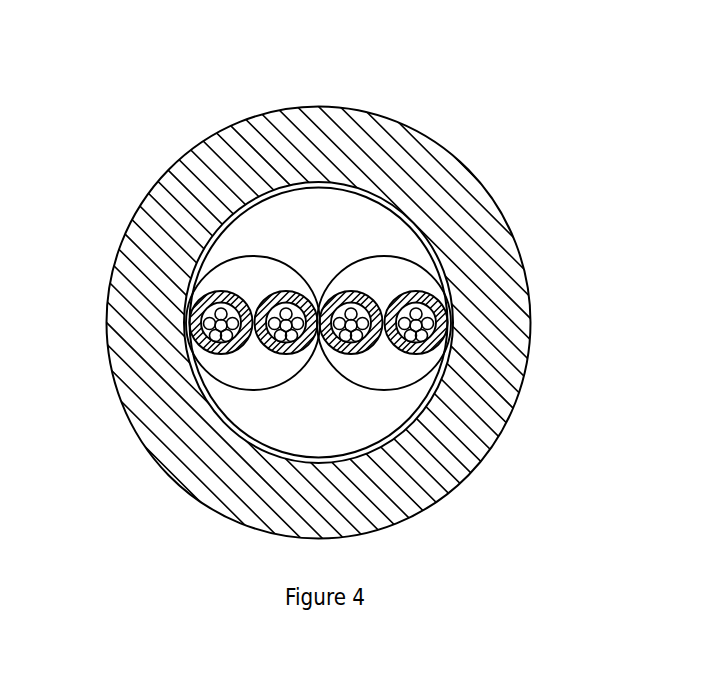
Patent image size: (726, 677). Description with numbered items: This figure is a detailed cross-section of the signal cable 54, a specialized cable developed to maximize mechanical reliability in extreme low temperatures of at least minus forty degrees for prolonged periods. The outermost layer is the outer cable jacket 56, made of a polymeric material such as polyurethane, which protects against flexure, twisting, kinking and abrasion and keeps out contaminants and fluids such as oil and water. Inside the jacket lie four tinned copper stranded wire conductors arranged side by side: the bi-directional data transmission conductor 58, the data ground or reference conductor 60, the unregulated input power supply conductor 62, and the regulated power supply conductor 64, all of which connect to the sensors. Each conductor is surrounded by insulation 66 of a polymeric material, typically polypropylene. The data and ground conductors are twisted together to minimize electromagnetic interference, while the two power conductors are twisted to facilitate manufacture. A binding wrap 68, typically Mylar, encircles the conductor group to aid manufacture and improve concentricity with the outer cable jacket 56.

The signal cable 54 is at (363, 338).
The outer cable jacket 56 is at (142, 197).
The bi-directional data transmission conductor 58 is at (220, 318).
The data ground or reference conductor 60 is at (285, 318).
The unregulated input power supply conductor 62 is at (366, 213).
The regulated power supply conductor 64 is at (416, 318).
The conductor insulation 66 is at (344, 295).
The binding wrap 68 is at (376, 449).